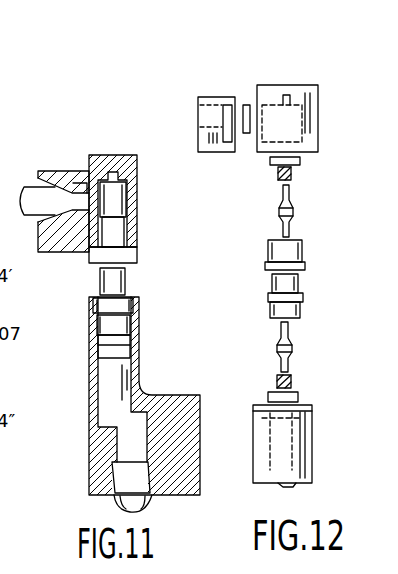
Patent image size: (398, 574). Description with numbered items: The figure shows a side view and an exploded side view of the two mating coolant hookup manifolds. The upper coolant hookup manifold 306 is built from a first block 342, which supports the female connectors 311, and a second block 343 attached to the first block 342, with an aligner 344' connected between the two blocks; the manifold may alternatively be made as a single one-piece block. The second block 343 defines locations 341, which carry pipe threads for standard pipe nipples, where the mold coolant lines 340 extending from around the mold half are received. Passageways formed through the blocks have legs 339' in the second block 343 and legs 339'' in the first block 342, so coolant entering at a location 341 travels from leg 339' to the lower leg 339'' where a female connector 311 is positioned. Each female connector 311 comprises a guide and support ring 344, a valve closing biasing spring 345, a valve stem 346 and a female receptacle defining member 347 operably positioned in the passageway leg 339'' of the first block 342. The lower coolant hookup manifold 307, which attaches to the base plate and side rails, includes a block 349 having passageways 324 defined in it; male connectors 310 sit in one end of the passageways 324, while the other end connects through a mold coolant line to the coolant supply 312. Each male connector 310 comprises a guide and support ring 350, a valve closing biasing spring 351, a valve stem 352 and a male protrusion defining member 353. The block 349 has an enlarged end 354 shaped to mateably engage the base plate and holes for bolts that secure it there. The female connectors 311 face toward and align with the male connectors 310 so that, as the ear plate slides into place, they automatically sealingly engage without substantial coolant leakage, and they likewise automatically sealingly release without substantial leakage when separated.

In FIG. 11, the coolant hookup manifold 306 is at (139, 168).
In FIG. 12, the coolant hookup manifold 306 is at (272, 76).
In FIG. 11, the coolant hookup manifold 307 is at (138, 424).
In FIG. 12, the coolant hookup manifold 307 is at (298, 398).
In FIG. 11, the male connector 310 is at (127, 282).
In FIG. 12, the male connector 310 is at (253, 280).
In FIG. 12, the female connector 311 is at (276, 206).
In FIG. 11, the coolant supply 312 is at (110, 508).
In FIG. 11, the passageway 324 is at (130, 436).
In FIG. 12, the passageway 324 is at (316, 499).
In FIG. 12, the leg of passageway 339' is at (256, 63).
In FIG. 12, the leg of passageway 339'' is at (325, 72).
In FIG. 11, the mold coolant line 340 is at (36, 230).
In FIG. 11, the location 341 is at (50, 171).
In FIG. 12, the location 341 is at (198, 117).
In FIG. 11, the first block 342 is at (100, 172).
In FIG. 12, the first block 342 is at (325, 152).
In FIG. 11, the second block 343 is at (50, 195).
In FIG. 12, the second block 343 is at (212, 106).
In FIG. 12, the guide and support ring 344 is at (309, 175).
In FIG. 12, the aligner 344' is at (271, 87).
In FIG. 12, the valve closing biasing spring 345 is at (278, 175).
In FIG. 12, the valve stem 346 is at (292, 213).
In FIG. 12, the female receptacle defining member 347 is at (271, 236).
In FIG. 11, the block 349 is at (172, 496).
In FIG. 12, the block 349 is at (253, 457).
In FIG. 12, the guide and support ring 350 is at (268, 397).
In FIG. 12, the valve closing biasing spring 351 is at (310, 368).
In FIG. 12, the valve stem 352 is at (278, 360).
In FIG. 12, the male protrusion defining member 353 is at (302, 313).
In FIG. 11, the enlarged end 354 is at (181, 395).